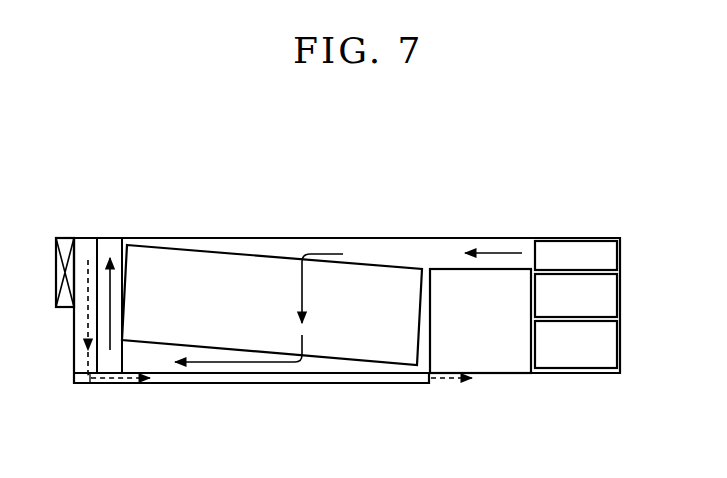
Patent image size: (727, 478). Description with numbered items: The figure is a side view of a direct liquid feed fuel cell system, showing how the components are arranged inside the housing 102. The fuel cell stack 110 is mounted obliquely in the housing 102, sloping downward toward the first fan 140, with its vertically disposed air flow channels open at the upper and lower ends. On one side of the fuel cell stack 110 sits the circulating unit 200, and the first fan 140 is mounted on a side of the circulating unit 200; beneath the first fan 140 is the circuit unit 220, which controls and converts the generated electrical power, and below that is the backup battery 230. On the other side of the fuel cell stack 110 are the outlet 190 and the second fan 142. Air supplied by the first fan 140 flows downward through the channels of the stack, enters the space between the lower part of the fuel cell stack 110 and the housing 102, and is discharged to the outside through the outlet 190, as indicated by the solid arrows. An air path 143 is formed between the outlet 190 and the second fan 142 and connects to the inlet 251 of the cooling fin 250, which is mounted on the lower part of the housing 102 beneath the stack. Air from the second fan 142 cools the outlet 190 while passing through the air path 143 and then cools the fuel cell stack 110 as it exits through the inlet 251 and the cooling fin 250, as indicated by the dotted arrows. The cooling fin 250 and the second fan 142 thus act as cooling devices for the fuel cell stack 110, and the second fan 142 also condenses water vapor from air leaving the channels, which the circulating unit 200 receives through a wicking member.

The housing 102 is at (220, 238).
The fuel cell stack 110 is at (355, 263).
The first fan 140 is at (575, 241).
The second fan 142 is at (65, 238).
The air path 143 is at (92, 238).
The outlet 190 is at (112, 238).
The circulating unit 200 is at (453, 269).
The circuit unit 220 is at (605, 296).
The backup battery 230 is at (590, 370).
The cooling fin 250 is at (313, 383).
The inlet 251 is at (83, 375).